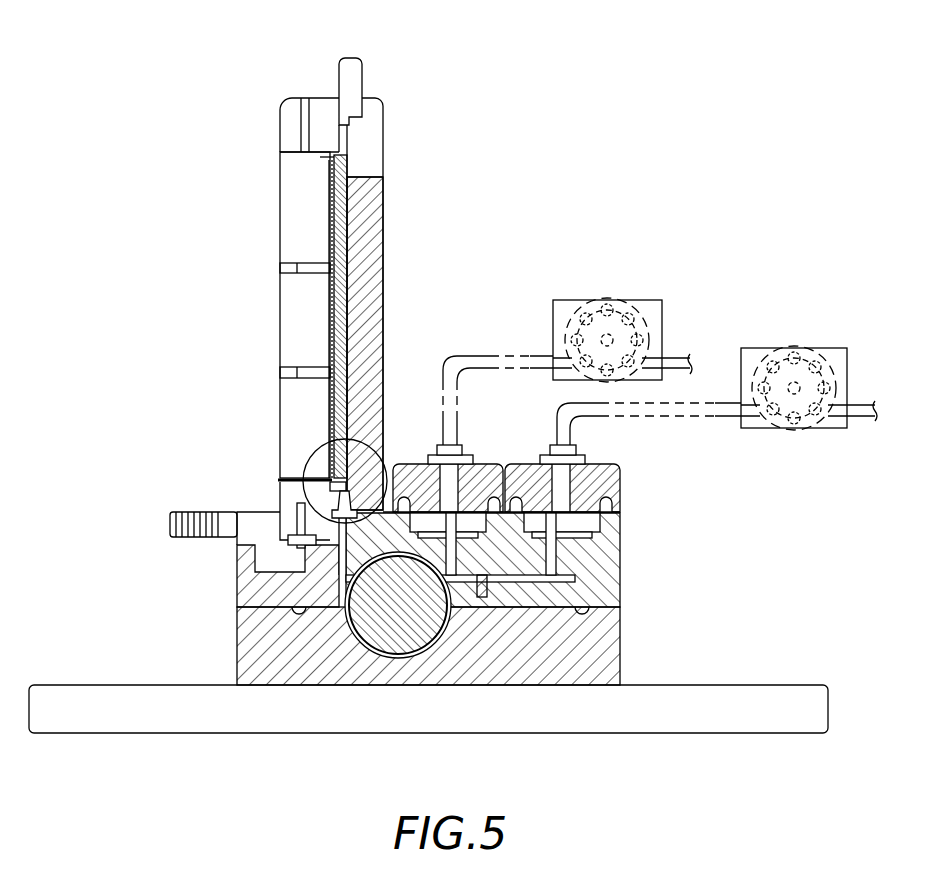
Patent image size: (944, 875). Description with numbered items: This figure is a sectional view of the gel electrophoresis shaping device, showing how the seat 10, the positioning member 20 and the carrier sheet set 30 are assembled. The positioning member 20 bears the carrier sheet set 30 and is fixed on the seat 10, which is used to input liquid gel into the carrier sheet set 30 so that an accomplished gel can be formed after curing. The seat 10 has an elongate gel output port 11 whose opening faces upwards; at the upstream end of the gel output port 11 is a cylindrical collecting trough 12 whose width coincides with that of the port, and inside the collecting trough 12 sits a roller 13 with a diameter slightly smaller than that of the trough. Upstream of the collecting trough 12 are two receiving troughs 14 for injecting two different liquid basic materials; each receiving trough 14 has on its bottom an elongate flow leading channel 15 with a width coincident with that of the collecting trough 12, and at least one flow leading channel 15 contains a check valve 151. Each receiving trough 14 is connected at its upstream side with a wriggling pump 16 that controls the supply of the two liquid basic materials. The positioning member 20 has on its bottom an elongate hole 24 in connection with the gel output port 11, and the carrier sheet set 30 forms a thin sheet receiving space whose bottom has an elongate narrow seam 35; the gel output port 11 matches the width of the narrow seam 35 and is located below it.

The seat 10 is at (203, 558).
The gel output port 11 is at (300, 557).
The collecting trough 12 is at (335, 626).
The roller 13 is at (340, 582).
The receiving trough 14 is at (500, 465).
The flow leading channel 15 is at (432, 505).
The check valve 151 is at (488, 586).
The wriggling pump 16 is at (640, 300).
The positioning member 20 is at (324, 275).
The elongate hole 24 is at (342, 503).
The carrier sheet set 30 is at (326, 233).
The narrow seam 35 is at (330, 484).